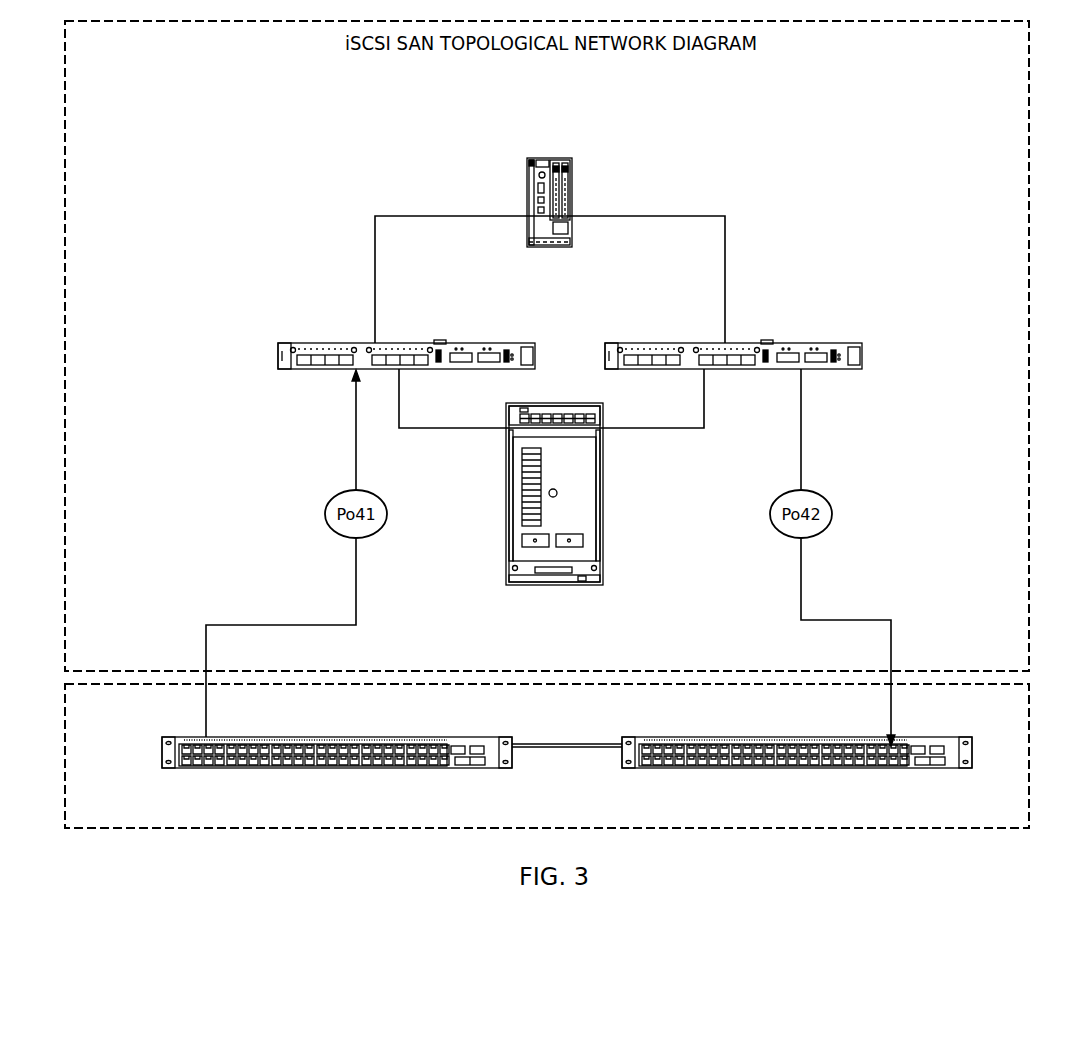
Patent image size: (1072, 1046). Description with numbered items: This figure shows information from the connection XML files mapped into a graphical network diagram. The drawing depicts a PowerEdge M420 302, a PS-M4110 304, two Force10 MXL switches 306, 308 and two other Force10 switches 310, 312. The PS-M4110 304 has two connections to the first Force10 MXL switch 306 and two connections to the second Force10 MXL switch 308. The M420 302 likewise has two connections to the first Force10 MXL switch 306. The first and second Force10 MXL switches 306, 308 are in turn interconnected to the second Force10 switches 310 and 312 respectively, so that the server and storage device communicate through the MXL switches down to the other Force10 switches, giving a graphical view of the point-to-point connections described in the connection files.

The PowerEdge M420 302 is at (573, 190).
The PS-M4110 304 is at (603, 509).
The first Force10 MXL switch 306 is at (455, 343).
The second Force10 MXL switch 308 is at (836, 343).
The Force10 switch 310 is at (473, 737).
The Force10 switch 312 is at (936, 737).